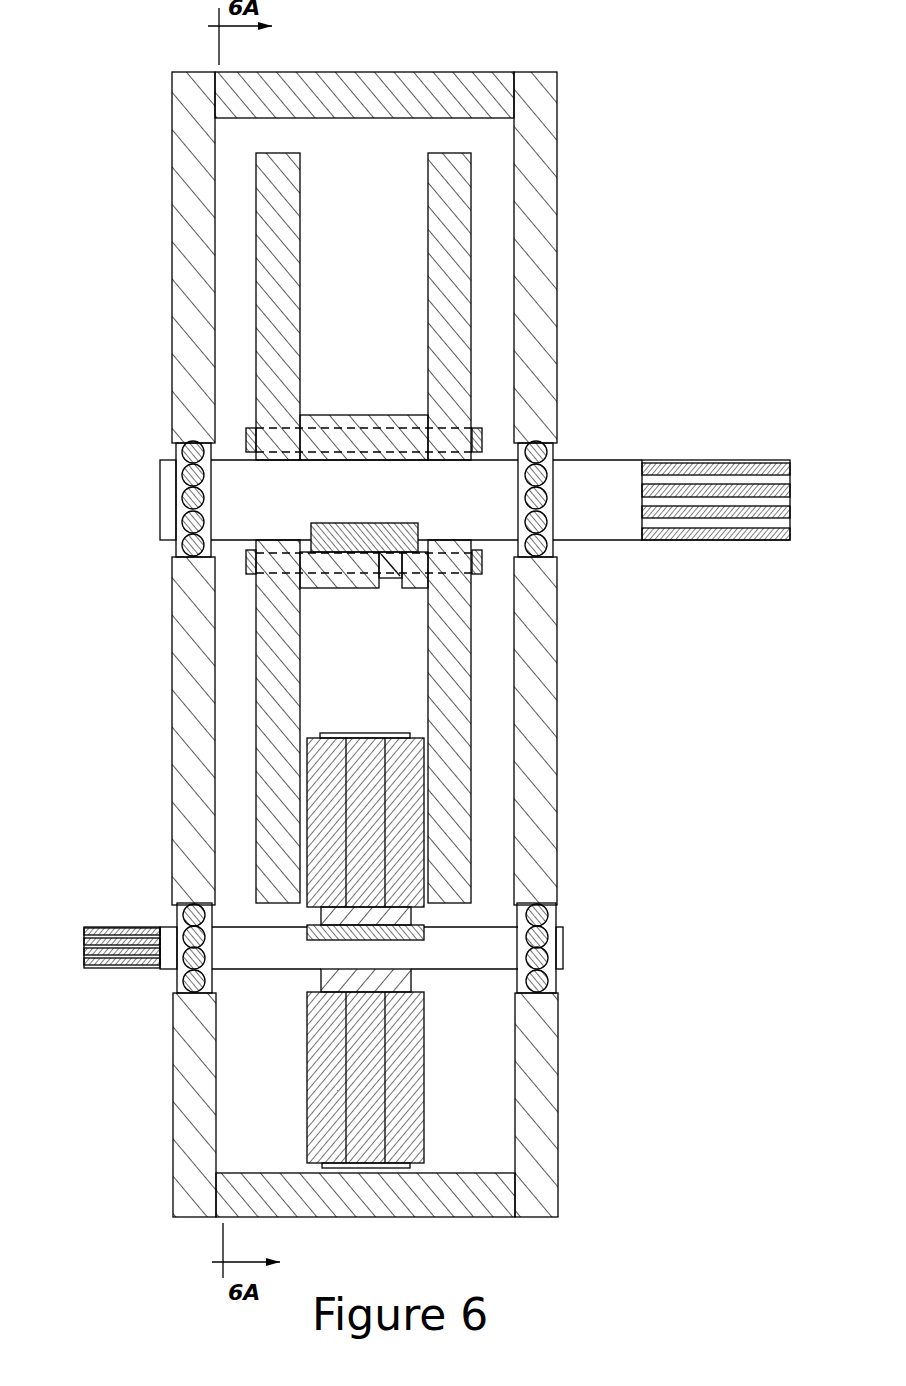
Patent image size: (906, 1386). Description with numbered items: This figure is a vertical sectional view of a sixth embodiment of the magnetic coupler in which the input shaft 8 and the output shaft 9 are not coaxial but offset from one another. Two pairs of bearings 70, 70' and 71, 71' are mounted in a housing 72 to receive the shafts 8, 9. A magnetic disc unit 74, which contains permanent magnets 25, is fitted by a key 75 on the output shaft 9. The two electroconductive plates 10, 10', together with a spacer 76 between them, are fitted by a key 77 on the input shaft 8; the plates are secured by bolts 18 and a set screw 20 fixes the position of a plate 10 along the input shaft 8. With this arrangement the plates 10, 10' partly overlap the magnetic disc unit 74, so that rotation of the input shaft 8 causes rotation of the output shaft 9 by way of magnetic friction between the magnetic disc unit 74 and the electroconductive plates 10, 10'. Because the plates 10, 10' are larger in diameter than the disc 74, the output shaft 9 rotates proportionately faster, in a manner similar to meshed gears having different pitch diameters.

The housing 72 is at (168, 122).
The electroconductive plate 10 is at (205, 528).
The electroconductive plate 10' is at (535, 528).
The bolts 18 is at (483, 432).
The bearing 70 is at (149, 466).
The bearing 70' is at (594, 458).
The bearing 71 is at (157, 915).
The bearing 71' is at (601, 924).
The input shaft 8 is at (733, 458).
The output shaft 9 is at (84, 927).
The key 77 is at (420, 530).
The spacer 76 is at (318, 590).
The set screw 20 is at (405, 588).
The magnetic disc unit 74 is at (352, 727).
The key 75 is at (423, 941).
The permanent magnets 25 is at (355, 1100).